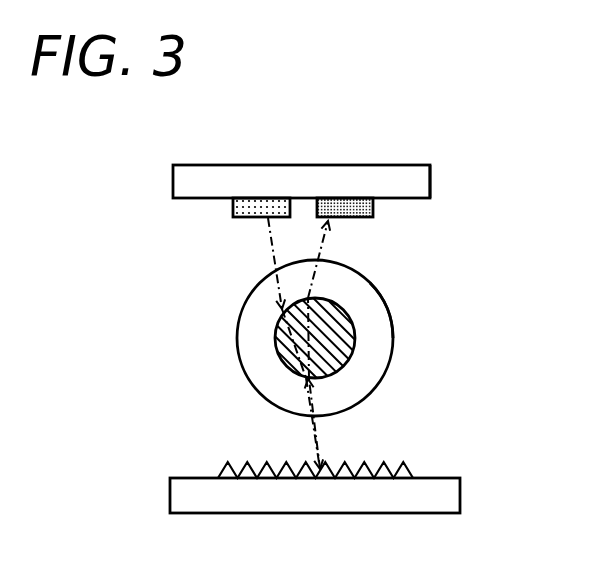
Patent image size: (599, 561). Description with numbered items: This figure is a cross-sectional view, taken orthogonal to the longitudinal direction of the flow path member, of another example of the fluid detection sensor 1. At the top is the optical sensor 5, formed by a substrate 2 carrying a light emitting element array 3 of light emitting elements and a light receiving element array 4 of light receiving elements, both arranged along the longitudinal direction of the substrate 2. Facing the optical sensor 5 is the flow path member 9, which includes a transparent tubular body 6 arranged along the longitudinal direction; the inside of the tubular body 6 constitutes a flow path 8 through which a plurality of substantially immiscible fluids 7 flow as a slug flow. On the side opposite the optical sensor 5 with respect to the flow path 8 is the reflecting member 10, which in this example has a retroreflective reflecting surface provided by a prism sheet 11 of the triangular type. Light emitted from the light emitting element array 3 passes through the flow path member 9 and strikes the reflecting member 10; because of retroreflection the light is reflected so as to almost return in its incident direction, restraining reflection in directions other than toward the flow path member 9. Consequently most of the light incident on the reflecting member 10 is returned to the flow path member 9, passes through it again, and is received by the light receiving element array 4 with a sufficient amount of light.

The fluid detection sensor 1 is at (434, 130).
The substrate 2 is at (200, 168).
The light emitting element array 3 is at (268, 205).
The light receiving element array 4 is at (350, 197).
The optical sensor 5 is at (432, 178).
The tubular body 6 is at (252, 310).
The fluids 7 is at (297, 343).
The flow path 8 is at (273, 340).
The flow path member 9 is at (388, 305).
The reflecting member 10 is at (438, 477).
The prism sheet 11 is at (410, 473).